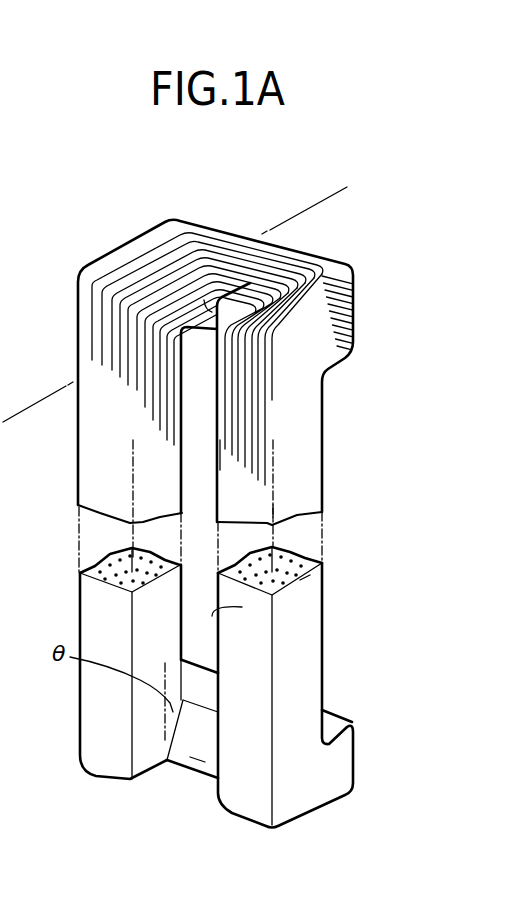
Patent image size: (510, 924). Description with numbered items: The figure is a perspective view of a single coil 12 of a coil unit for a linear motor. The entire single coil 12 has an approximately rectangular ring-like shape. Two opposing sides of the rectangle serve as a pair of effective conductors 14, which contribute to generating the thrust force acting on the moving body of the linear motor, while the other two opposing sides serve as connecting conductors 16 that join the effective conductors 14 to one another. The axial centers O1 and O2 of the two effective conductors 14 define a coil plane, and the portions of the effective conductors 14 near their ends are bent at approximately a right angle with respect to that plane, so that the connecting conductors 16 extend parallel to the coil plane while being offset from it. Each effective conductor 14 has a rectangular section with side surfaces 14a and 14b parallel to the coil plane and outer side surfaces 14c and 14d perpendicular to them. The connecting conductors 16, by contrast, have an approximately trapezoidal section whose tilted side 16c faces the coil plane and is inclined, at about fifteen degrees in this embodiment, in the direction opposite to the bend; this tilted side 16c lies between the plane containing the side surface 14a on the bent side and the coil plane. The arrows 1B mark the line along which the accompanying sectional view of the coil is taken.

The single coil 12 is at (368, 338).
The effective conductors 14 is at (106, 628).
The side surface 14a is at (322, 455).
The side surface 14b is at (254, 467).
The outer side surface 14c is at (302, 592).
The outer side surface 14d is at (212, 616).
The connecting conductors 16 is at (341, 251).
The tilted side 16c is at (210, 300).
The arrows 1B is at (327, 206).
The axial center O1 is at (133, 536).
The axial center O2 is at (273, 505).